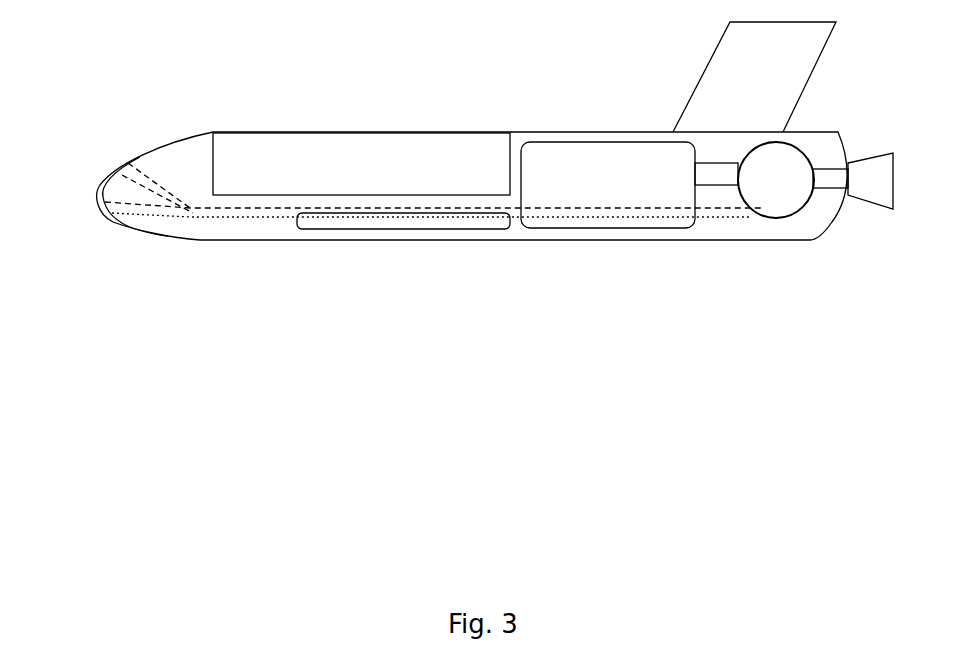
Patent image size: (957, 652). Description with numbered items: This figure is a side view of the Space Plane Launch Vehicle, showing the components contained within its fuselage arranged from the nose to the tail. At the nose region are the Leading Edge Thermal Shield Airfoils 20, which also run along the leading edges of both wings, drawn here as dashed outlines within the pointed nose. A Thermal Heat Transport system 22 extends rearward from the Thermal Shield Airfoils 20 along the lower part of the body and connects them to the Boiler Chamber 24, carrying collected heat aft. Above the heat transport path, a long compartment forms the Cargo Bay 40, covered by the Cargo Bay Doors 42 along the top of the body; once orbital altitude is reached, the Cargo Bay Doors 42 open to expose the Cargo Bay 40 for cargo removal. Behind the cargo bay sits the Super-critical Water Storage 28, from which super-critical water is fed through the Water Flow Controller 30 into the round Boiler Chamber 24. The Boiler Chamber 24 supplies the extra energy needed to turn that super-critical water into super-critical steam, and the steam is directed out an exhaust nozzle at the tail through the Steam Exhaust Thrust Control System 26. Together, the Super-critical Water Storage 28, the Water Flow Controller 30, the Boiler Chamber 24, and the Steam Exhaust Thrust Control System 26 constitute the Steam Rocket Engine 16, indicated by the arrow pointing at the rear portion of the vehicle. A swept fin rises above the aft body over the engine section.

The Steam Rocket Engine 16 is at (655, 268).
The Leading Edge Thermal Shield Airfoils 20 is at (290, 218).
The Thermal Heat Transport system 22 is at (385, 208).
The Boiler Chamber 24 is at (772, 180).
The Steam Exhaust Thrust Control System 26 is at (872, 175).
The Super-critical Water Storage 28 is at (597, 175).
The Water Flow Controller 30 is at (716, 176).
The Cargo Bay 40 is at (247, 165).
The Cargo Bay Doors 42 is at (313, 143).